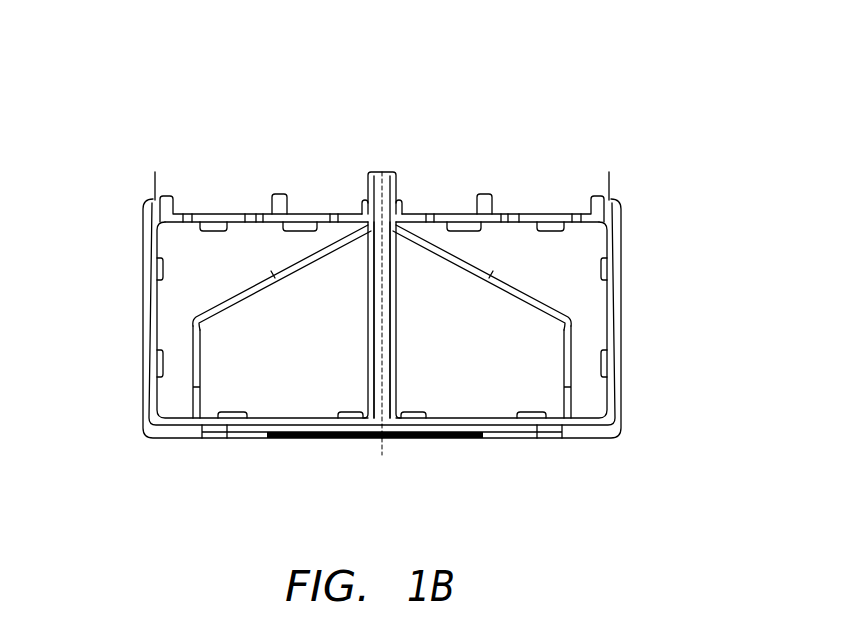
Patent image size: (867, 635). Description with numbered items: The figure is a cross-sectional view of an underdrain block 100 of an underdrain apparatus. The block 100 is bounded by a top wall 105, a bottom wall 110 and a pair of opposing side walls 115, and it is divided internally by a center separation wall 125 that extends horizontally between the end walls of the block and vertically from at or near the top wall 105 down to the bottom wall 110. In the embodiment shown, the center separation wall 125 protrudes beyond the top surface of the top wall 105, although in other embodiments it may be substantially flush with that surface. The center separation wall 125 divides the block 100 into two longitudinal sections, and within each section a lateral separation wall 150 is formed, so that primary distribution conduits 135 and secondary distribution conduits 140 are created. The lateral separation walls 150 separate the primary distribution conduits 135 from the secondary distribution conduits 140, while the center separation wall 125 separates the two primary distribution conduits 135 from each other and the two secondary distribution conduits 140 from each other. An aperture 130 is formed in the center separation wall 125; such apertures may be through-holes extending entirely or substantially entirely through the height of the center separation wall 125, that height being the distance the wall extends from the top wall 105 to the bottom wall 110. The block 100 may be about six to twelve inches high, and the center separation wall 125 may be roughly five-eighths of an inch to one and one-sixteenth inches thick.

The underdrain block 100 is at (672, 58).
The top wall 105 is at (443, 213).
The bottom wall 110 is at (462, 442).
The side walls 115 is at (143, 291).
The center separation wall 125 is at (367, 346).
The aperture 130 is at (386, 171).
The primary distribution conduits 135 is at (297, 394).
The secondary distribution conduits 140 is at (190, 245).
The lateral separation walls 150 is at (250, 286).